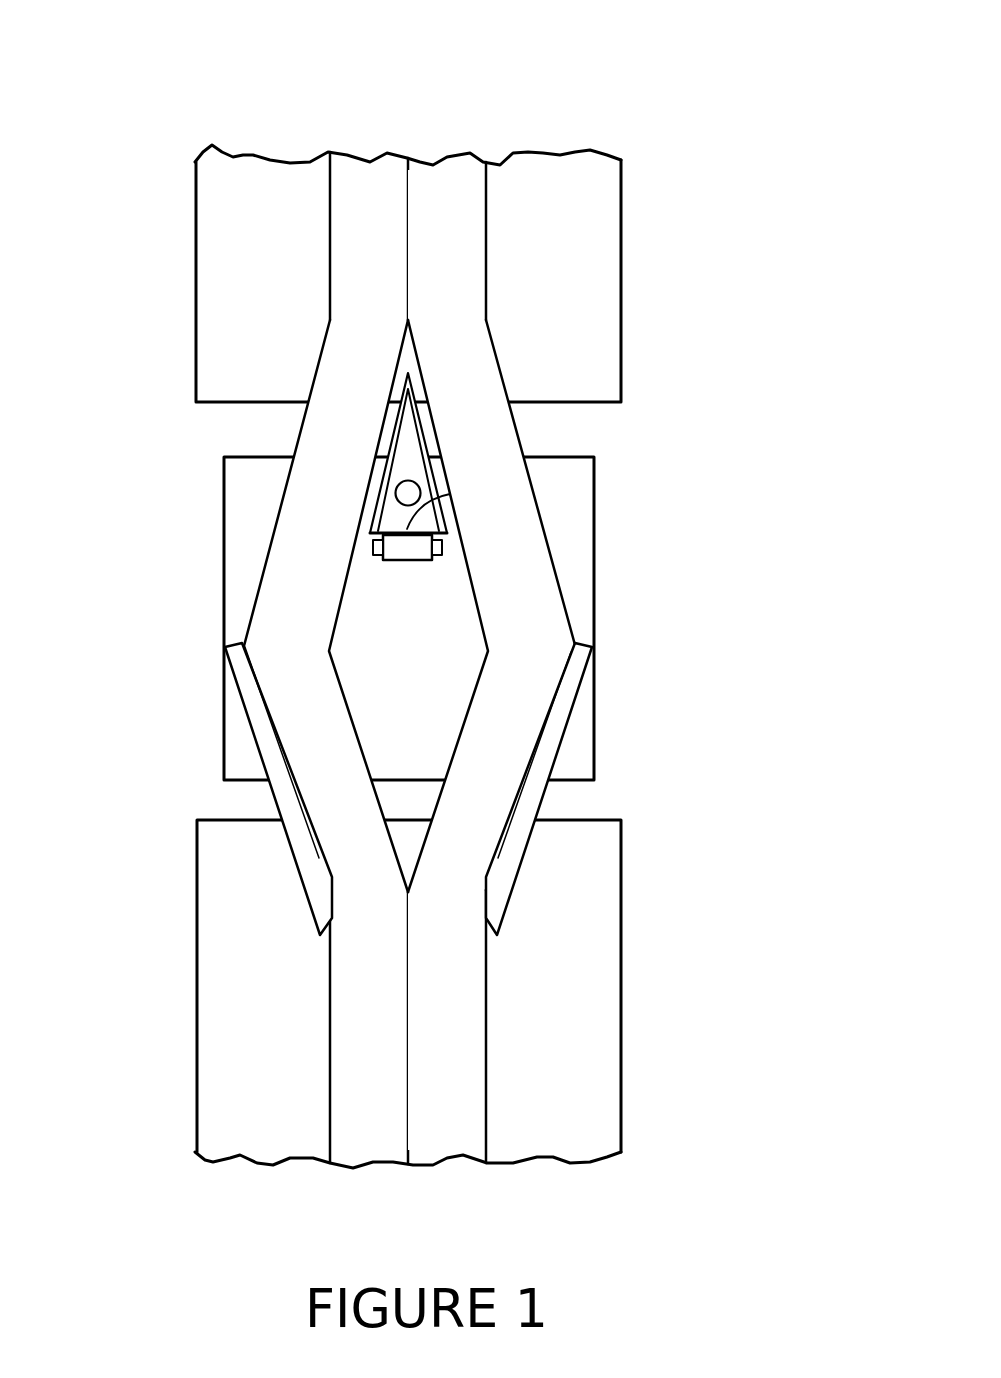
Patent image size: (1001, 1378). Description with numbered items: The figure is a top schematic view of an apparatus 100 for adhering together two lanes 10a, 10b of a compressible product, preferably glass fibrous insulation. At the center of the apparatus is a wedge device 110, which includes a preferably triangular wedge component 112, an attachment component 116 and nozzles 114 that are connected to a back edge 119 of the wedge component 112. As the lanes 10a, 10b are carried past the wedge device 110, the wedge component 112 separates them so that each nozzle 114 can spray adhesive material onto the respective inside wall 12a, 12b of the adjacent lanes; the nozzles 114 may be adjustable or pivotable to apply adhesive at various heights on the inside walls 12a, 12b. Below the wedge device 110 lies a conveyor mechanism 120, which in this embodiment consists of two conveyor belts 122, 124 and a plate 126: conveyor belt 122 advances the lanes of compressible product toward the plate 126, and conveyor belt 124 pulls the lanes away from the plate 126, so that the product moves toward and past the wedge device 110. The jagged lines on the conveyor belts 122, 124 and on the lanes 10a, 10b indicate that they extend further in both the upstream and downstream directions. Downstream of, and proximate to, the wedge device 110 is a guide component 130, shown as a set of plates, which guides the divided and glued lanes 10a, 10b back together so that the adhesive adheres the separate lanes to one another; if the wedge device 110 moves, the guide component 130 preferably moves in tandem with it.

The apparatus 100 is at (88, 43).
The lane of compressible product 10a is at (393, 247).
The lane of compressible product 10b is at (470, 247).
The inside wall 12a is at (360, 737).
The inside wall 12b is at (487, 630).
The wedge device 110 is at (363, 576).
The wedge component 112 is at (436, 457).
The nozzle 114 is at (373, 546).
The attachment component 116 is at (395, 493).
The back edge 119 is at (450, 494).
The conveyor mechanism 120 is at (646, 818).
The conveyor belt 122 is at (593, 318).
The conveyor belt 124 is at (578, 1002).
The plate 126 is at (238, 617).
The guide component 130 is at (265, 752).